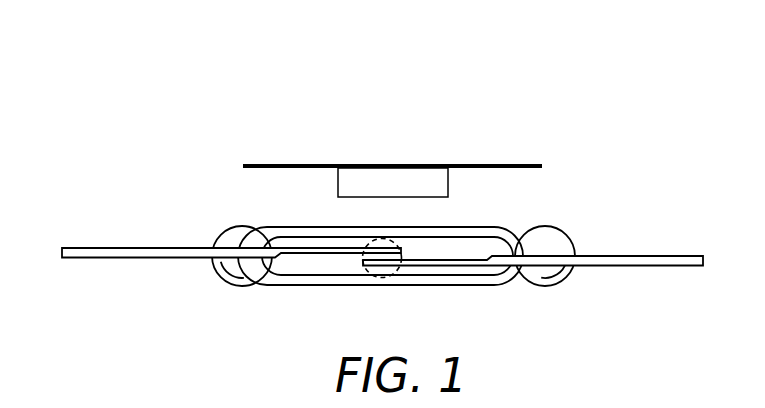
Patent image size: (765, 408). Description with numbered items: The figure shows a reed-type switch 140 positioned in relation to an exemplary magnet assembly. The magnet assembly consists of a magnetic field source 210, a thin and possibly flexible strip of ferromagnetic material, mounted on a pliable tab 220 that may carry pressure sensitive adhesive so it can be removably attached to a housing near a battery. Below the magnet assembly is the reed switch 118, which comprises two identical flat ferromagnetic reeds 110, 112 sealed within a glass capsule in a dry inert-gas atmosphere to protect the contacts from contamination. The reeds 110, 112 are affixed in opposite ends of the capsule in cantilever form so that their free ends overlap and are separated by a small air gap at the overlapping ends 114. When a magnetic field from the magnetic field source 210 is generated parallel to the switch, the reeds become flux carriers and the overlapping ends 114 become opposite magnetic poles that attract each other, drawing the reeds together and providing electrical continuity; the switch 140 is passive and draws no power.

The switch 140 is at (247, 58).
The reed 110 is at (330, 248).
The reed 112 is at (426, 268).
The overlapping ends 114 is at (360, 260).
The reed switch 118 is at (273, 290).
The tab 220 is at (475, 165).
The magnetic field source 210 is at (460, 198).